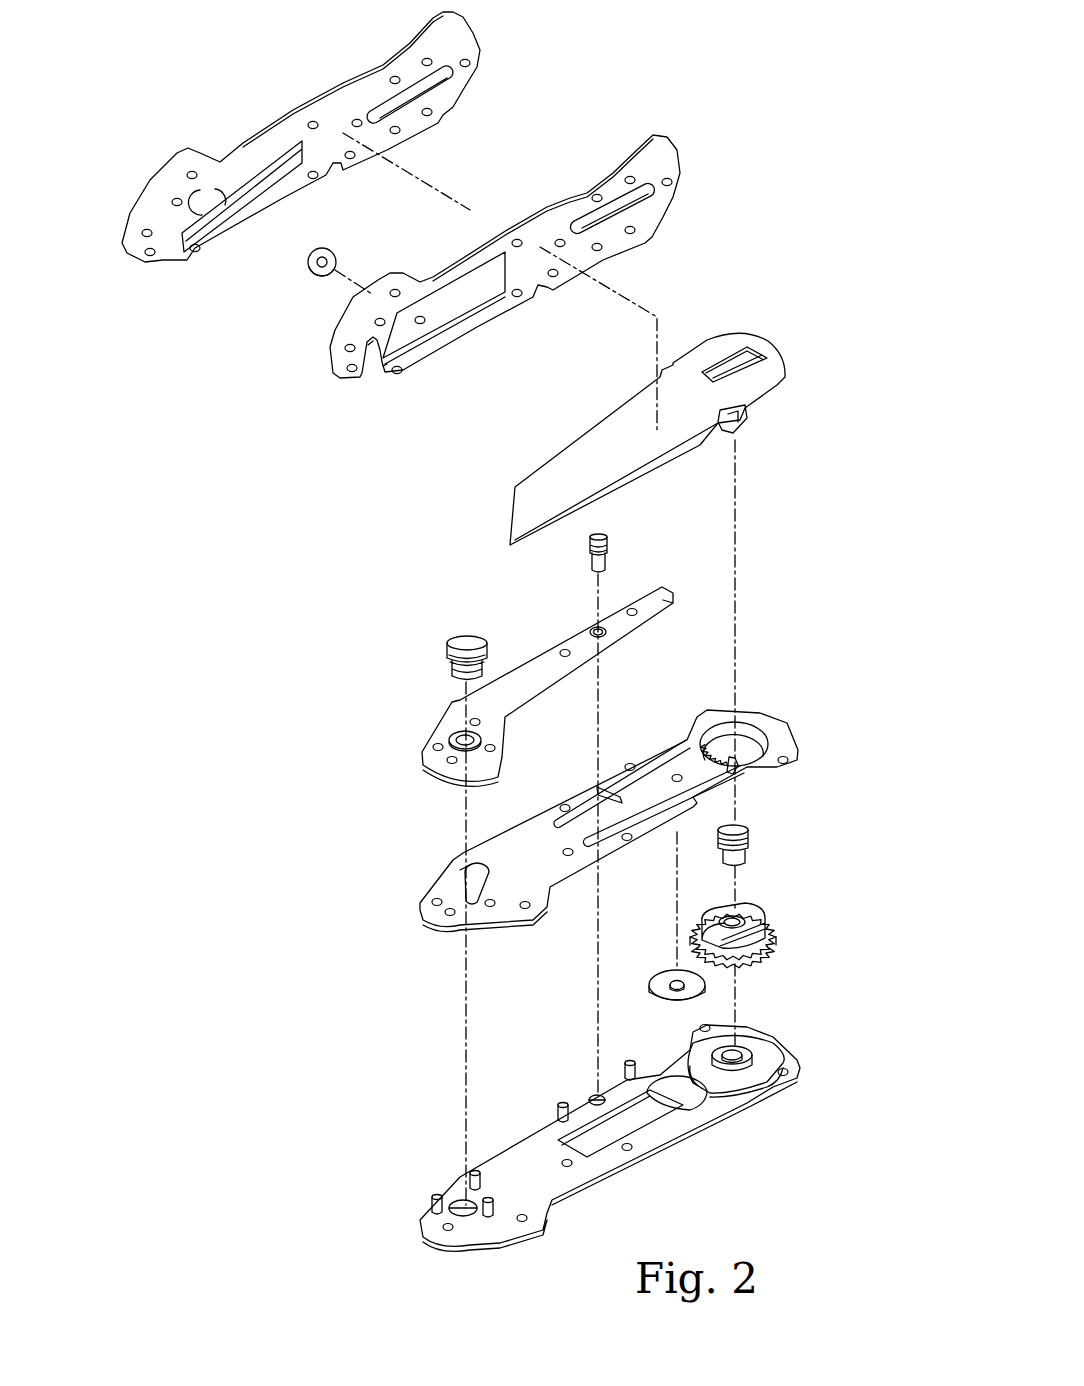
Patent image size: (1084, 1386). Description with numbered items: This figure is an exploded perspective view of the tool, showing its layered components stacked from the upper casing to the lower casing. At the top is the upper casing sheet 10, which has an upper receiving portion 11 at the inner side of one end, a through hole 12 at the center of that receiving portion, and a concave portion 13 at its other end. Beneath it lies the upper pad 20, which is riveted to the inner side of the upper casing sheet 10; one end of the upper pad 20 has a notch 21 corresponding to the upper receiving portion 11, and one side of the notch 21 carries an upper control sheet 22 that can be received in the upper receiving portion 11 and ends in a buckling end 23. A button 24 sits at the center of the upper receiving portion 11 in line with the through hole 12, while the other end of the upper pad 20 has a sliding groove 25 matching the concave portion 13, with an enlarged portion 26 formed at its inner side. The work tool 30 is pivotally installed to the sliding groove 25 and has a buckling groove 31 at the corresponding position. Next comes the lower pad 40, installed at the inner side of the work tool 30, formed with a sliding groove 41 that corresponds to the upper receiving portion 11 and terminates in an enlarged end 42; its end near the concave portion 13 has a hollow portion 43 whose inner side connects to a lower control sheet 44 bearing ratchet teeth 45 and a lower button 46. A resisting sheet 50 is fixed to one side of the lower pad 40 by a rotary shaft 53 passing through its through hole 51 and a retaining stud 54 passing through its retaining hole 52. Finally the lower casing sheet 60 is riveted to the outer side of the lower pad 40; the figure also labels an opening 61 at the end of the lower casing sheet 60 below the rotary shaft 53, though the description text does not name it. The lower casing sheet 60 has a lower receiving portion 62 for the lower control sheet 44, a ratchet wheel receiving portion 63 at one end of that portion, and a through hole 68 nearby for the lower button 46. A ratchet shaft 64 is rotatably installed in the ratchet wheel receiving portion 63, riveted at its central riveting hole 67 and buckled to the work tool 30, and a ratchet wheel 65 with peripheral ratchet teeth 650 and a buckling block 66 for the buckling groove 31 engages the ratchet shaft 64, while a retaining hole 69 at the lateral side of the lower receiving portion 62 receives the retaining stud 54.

The upper casing sheet 10 is at (324, 137).
The upper receiving portion 11 is at (258, 182).
The through hole 12 is at (207, 210).
The concave portion 13 is at (422, 87).
The upper pad 20 is at (525, 282).
The notch 21 is at (373, 365).
The upper control sheet 22 is at (453, 312).
The buckling end 23 is at (387, 364).
The button 24 is at (333, 256).
The sliding groove 25 is at (638, 198).
The enlarged portion 26 is at (600, 252).
The work tool 30 is at (675, 430).
The buckling groove 31 is at (748, 358).
The lower pad 40 is at (618, 814).
The sliding groove 41 is at (462, 893).
The enlarged end 42 is at (462, 870).
The hollow portion 43 is at (745, 738).
The lower control sheet 44 is at (720, 782).
The ratchet teeth 45 is at (722, 780).
The lower button 46 is at (662, 977).
The resisting sheet 50 is at (533, 686).
The through hole 51 is at (453, 737).
The retaining hole 52 is at (602, 637).
The rotary shaft 53 is at (453, 643).
The retaining stud 54 is at (603, 540).
The lower casing sheet 60 is at (615, 1129).
The hole of base plate 61 is at (457, 1200).
The lower receiving portion 62 is at (622, 1128).
The ratchet wheel receiving portion 63 is at (767, 1060).
The ratchet shaft 64 is at (745, 857).
The ratchet wheel 65 is at (790, 938).
The ratchet teeth 650 is at (772, 953).
The buckling block 66 is at (757, 910).
The riveting hole 67 is at (737, 1052).
The through hole 68 is at (690, 1097).
The retaining hole 69 is at (593, 1093).